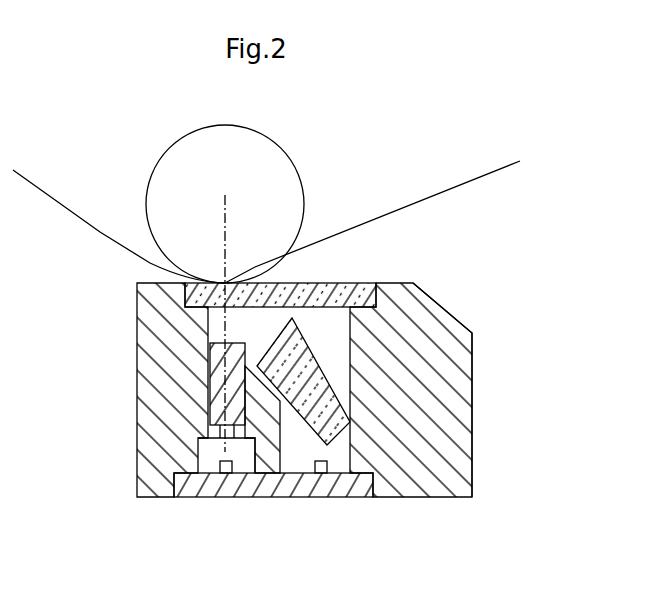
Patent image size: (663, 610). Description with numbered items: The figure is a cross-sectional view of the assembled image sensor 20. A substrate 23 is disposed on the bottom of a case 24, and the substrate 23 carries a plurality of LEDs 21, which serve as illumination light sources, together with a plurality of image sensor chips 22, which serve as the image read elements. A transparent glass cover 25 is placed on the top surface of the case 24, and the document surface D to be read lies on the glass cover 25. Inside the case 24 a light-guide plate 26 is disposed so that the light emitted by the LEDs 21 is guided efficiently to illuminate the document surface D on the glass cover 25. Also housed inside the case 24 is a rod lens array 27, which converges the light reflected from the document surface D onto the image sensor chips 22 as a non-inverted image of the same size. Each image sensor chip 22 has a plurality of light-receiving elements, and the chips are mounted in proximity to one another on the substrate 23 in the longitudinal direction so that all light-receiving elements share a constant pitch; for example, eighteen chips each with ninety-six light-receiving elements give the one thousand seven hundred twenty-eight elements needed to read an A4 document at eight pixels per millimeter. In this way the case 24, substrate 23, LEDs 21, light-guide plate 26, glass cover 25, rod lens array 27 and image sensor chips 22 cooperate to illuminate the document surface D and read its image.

The document surface D is at (430, 202).
The image sensor 20 is at (456, 285).
The LED 21 is at (313, 460).
The image sensor chip 22 is at (219, 468).
The substrate 23 is at (340, 498).
The case 24 is at (473, 375).
The transparent glass cover 25 is at (352, 283).
The light-guide plate 26 is at (328, 400).
The rod lens array 27 is at (212, 382).